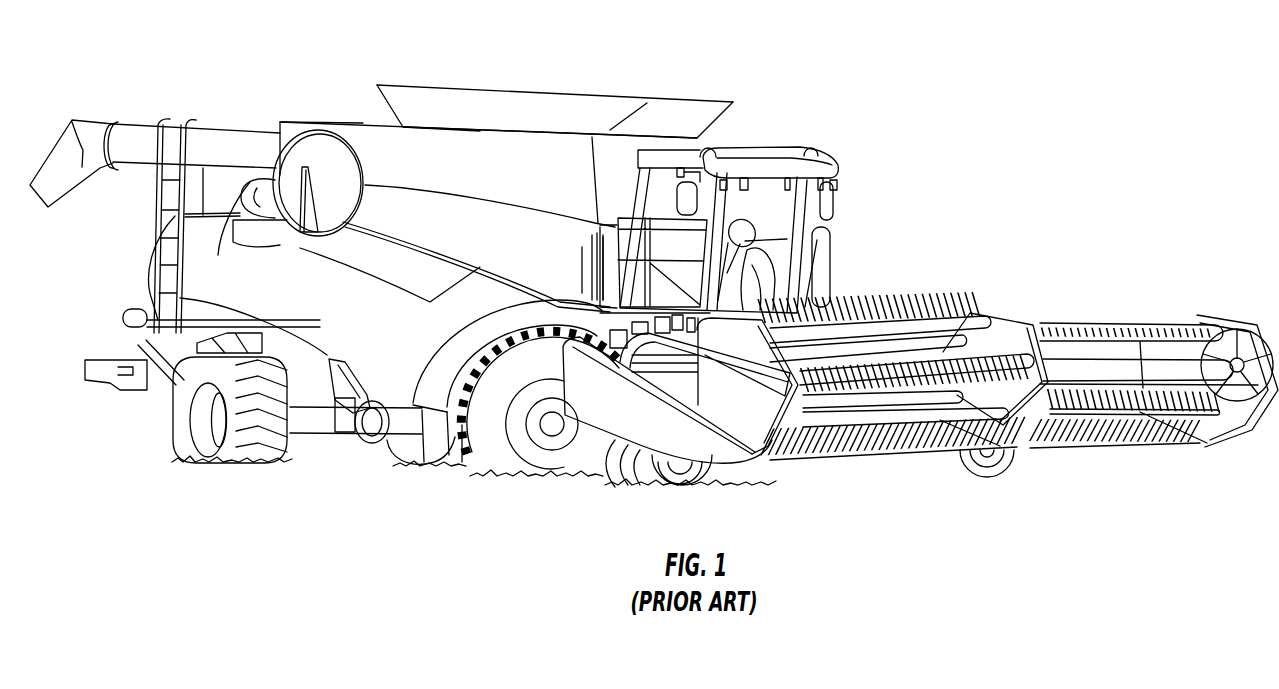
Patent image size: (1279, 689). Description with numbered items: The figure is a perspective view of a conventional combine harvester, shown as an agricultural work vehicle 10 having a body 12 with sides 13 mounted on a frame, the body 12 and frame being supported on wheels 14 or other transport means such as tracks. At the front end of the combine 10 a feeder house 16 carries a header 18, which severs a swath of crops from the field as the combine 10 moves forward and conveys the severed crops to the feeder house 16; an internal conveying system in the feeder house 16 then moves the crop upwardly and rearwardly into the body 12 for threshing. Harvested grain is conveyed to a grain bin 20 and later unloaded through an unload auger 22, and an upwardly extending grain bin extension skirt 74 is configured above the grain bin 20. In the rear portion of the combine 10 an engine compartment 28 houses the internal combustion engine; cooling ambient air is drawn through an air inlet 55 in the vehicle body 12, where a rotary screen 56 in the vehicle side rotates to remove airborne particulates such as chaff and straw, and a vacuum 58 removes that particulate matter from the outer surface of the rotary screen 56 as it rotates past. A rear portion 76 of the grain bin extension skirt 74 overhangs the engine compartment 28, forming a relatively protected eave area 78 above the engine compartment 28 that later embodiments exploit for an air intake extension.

The agricultural work vehicle 10 is at (947, 185).
The body 12 is at (351, 322).
The sides 13 is at (425, 218).
The wheels 14 is at (490, 473).
The feeder house 16 is at (648, 425).
The header 18 is at (1097, 327).
The grain bin 20 is at (508, 165).
The unload auger 22 is at (143, 131).
The engine compartment 28 is at (327, 121).
The air inlet 55 is at (302, 157).
The rotary screen 56 is at (255, 188).
The vacuum 58 is at (302, 210).
The grain bin extension skirt 74 is at (712, 102).
The rear portion 76 is at (400, 110).
The eave area 78 is at (386, 108).